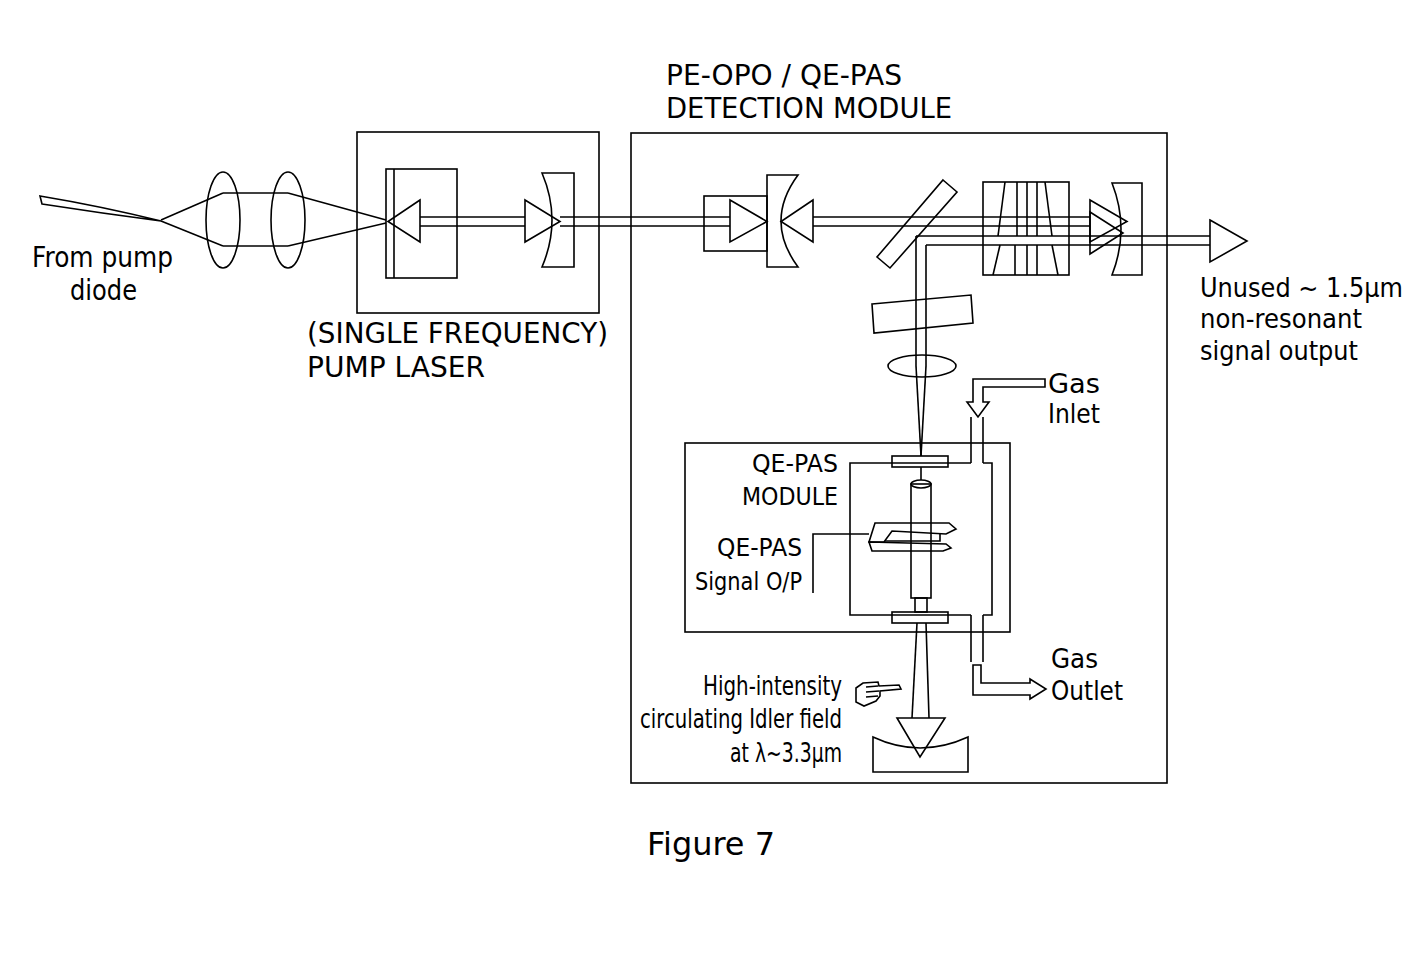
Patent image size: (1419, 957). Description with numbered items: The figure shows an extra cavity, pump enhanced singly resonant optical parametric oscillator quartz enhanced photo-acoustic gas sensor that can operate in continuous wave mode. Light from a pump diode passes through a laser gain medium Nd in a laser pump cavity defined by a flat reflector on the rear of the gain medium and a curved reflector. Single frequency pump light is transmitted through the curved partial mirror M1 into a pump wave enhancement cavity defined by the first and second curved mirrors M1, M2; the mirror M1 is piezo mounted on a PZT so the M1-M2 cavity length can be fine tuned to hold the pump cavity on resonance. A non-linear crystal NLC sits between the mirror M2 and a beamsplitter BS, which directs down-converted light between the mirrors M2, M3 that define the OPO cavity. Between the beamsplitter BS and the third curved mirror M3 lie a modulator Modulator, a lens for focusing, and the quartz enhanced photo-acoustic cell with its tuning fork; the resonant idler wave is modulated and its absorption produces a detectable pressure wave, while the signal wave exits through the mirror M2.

The laser gain medium Nd is at (421, 223).
The piezo mount PZT is at (735, 205).
The first curved mirror M1 is at (783, 237).
The beamsplitter BS is at (917, 222).
The non-linear crystal NLC is at (1025, 210).
The second curved mirror M2 is at (1127, 247).
The modulator Modulator is at (855, 314).
The third curved mirror M3 is at (942, 754).